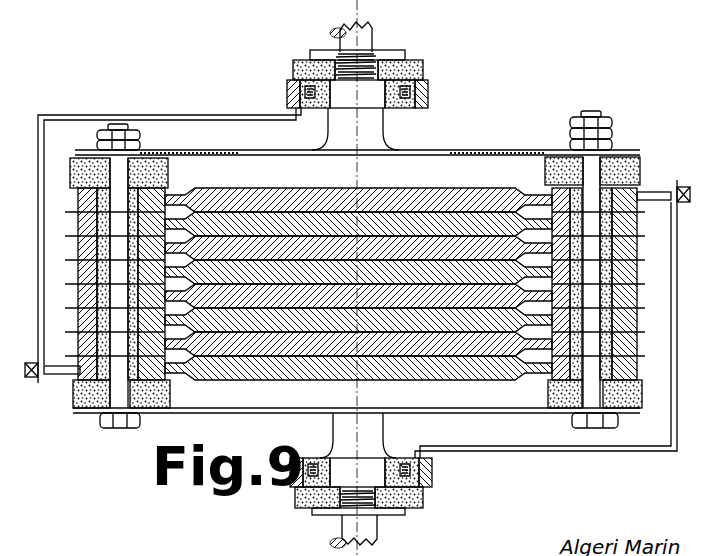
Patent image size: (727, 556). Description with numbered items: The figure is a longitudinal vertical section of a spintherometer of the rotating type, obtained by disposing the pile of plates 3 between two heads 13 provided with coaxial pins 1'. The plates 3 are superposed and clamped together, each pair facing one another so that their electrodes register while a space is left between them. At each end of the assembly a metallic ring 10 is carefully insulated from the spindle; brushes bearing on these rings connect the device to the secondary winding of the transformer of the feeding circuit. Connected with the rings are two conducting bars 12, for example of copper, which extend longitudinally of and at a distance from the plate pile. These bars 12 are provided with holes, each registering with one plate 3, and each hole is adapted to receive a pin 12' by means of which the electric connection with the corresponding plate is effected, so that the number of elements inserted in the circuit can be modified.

The metallic ring 10 is at (428, 97).
The coaxial pin 1' is at (371, 129).
The plate 3 is at (455, 190).
The head 13 is at (508, 150).
The conducting bar 12 is at (357, 283).
The pin 12' is at (358, 293).